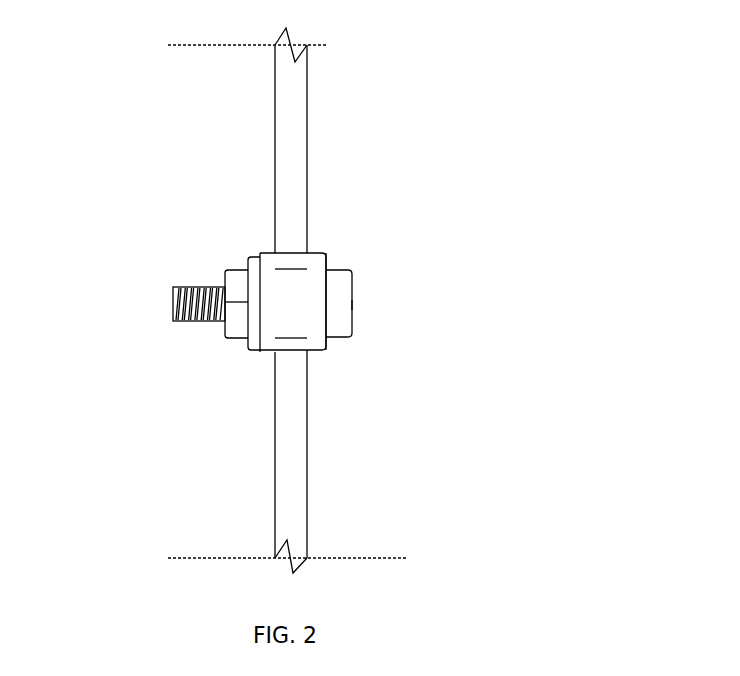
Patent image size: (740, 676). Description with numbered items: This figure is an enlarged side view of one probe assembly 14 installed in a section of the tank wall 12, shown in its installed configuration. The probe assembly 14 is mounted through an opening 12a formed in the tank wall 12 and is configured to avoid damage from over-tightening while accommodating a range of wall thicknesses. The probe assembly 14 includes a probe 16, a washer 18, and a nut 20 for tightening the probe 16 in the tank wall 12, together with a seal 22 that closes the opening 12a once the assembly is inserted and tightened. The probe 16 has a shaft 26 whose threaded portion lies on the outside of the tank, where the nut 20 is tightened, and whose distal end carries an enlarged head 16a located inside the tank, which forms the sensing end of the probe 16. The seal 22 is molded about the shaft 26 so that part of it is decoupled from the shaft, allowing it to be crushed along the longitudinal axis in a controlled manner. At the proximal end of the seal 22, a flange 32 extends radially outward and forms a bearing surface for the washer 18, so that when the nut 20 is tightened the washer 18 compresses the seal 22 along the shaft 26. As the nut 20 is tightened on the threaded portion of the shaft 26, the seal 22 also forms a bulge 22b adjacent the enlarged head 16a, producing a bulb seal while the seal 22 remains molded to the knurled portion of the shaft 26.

The tank wall 12 is at (320, 299).
The opening 12a is at (377, 228).
The probe assembly 14 is at (399, 270).
The probe 16 is at (172, 285).
The enlarged head 16a is at (422, 333).
The washer 18 is at (194, 242).
The nut 20 is at (185, 375).
The seal 22 is at (365, 379).
The bulge 22b is at (399, 264).
The shaft 26 is at (165, 310).
The flange 32 is at (239, 225).